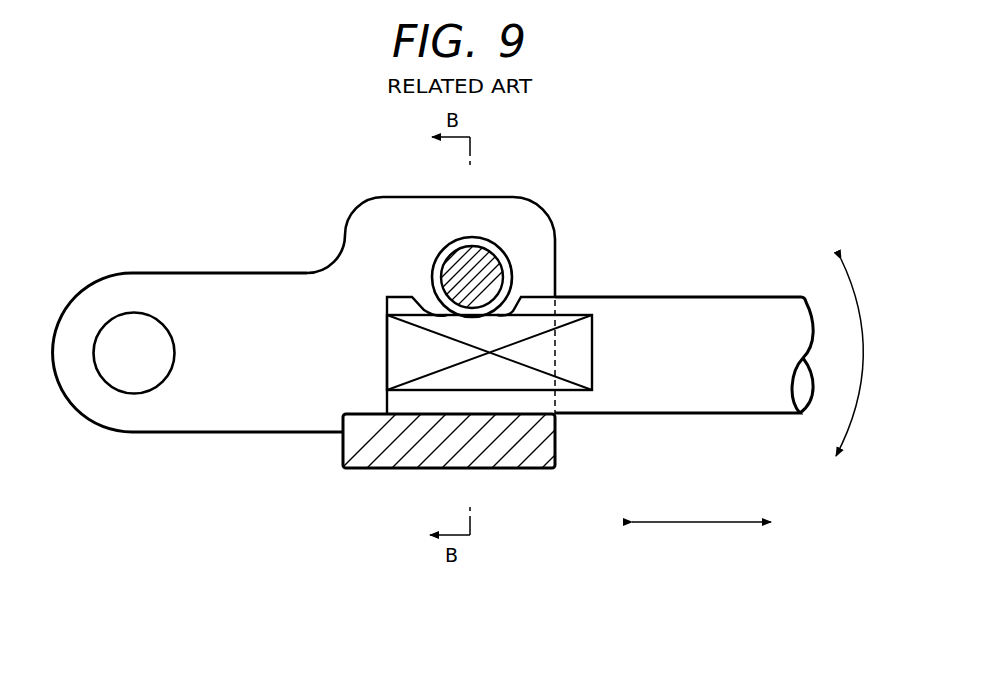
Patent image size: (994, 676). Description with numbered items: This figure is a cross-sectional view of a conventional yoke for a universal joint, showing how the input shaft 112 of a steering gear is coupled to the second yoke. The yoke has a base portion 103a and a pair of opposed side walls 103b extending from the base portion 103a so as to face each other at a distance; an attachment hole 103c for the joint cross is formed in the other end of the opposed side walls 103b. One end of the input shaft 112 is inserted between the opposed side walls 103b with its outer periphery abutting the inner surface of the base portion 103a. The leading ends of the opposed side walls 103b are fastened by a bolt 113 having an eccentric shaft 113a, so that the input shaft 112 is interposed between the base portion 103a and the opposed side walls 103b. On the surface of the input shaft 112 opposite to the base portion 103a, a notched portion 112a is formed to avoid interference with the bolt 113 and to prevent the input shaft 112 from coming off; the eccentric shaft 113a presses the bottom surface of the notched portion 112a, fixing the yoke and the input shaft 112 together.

The base portion 103a is at (355, 462).
The opposed side walls 103b is at (367, 225).
The attachment hole 103c is at (162, 326).
The input shaft 112 is at (721, 307).
The notched portion 112a is at (521, 293).
The bolt 113 is at (456, 258).
The eccentric shaft 113a is at (503, 250).